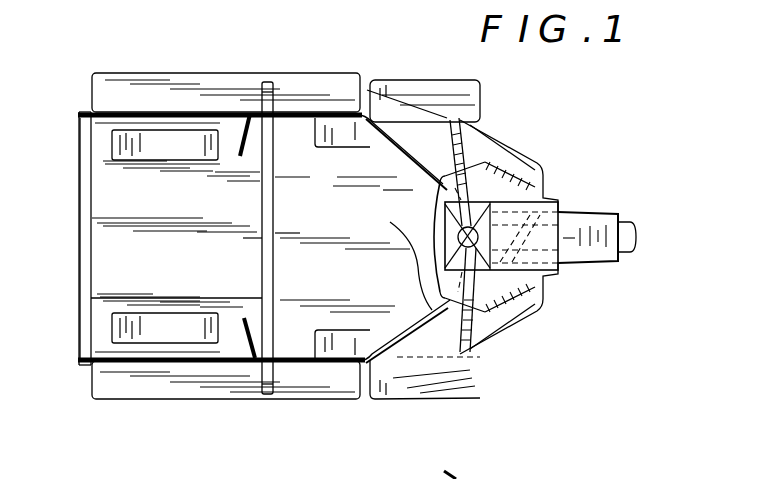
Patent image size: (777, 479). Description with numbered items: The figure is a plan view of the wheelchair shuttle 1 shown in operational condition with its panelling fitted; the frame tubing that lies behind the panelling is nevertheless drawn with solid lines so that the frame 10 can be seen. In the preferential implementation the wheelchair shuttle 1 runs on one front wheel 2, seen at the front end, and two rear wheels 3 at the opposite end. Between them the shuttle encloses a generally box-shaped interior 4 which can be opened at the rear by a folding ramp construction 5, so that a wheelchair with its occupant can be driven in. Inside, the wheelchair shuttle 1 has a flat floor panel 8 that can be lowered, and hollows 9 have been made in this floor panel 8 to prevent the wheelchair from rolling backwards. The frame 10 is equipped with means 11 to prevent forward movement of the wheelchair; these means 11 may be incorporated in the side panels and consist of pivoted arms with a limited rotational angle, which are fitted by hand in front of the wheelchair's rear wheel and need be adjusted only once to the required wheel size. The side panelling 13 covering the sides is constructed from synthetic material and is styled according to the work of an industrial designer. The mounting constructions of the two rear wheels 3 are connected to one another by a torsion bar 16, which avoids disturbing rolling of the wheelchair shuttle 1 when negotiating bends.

The wheelchair shuttle 1 is at (523, 117).
The front wheel 2 is at (606, 265).
The rear wheel 3 is at (167, 72).
The box-shaped interior 4 is at (122, 208).
The folding ramp construction 5 is at (80, 271).
The floor panel 8 is at (118, 286).
The hollows 9 is at (115, 146).
The frame 10 is at (413, 180).
The means to prevent forward movement 11 is at (237, 118).
The side panelling 13 is at (368, 90).
The torsion bar 16 is at (277, 289).